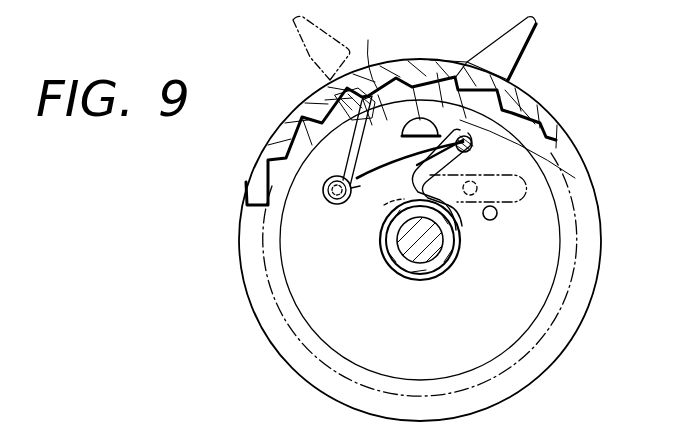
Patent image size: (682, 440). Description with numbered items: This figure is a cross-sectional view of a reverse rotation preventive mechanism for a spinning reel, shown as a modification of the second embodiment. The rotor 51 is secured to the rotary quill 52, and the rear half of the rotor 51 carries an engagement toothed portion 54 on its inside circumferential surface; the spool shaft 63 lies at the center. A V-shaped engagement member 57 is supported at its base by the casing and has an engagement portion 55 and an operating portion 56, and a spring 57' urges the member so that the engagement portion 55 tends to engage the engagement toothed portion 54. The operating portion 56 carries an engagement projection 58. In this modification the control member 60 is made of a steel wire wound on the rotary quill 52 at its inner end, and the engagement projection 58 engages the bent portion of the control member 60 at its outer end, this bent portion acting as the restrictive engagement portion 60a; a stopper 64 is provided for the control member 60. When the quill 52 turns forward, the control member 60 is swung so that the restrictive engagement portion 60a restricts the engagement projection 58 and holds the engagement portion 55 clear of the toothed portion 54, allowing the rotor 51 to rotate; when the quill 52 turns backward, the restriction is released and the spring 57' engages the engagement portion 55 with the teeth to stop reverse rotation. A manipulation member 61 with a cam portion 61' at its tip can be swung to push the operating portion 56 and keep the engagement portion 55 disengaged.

The rotor 51 is at (566, 352).
The rotary quill 52 is at (378, 247).
The engagement toothed portion 54 is at (368, 40).
The engagement portion 55 is at (340, 87).
The operating portion 56 is at (438, 147).
The V-shaped engagement member 57 is at (301, 141).
The spring 57' is at (282, 174).
The engagement projection 58 is at (562, 138).
The control member 60 is at (548, 182).
The restrictive engagement portion 60a is at (505, 90).
The manipulation member 61 is at (517, 46).
The cam portion 61' is at (422, 74).
The spool shaft 63 is at (463, 252).
The stopper 64 is at (497, 214).